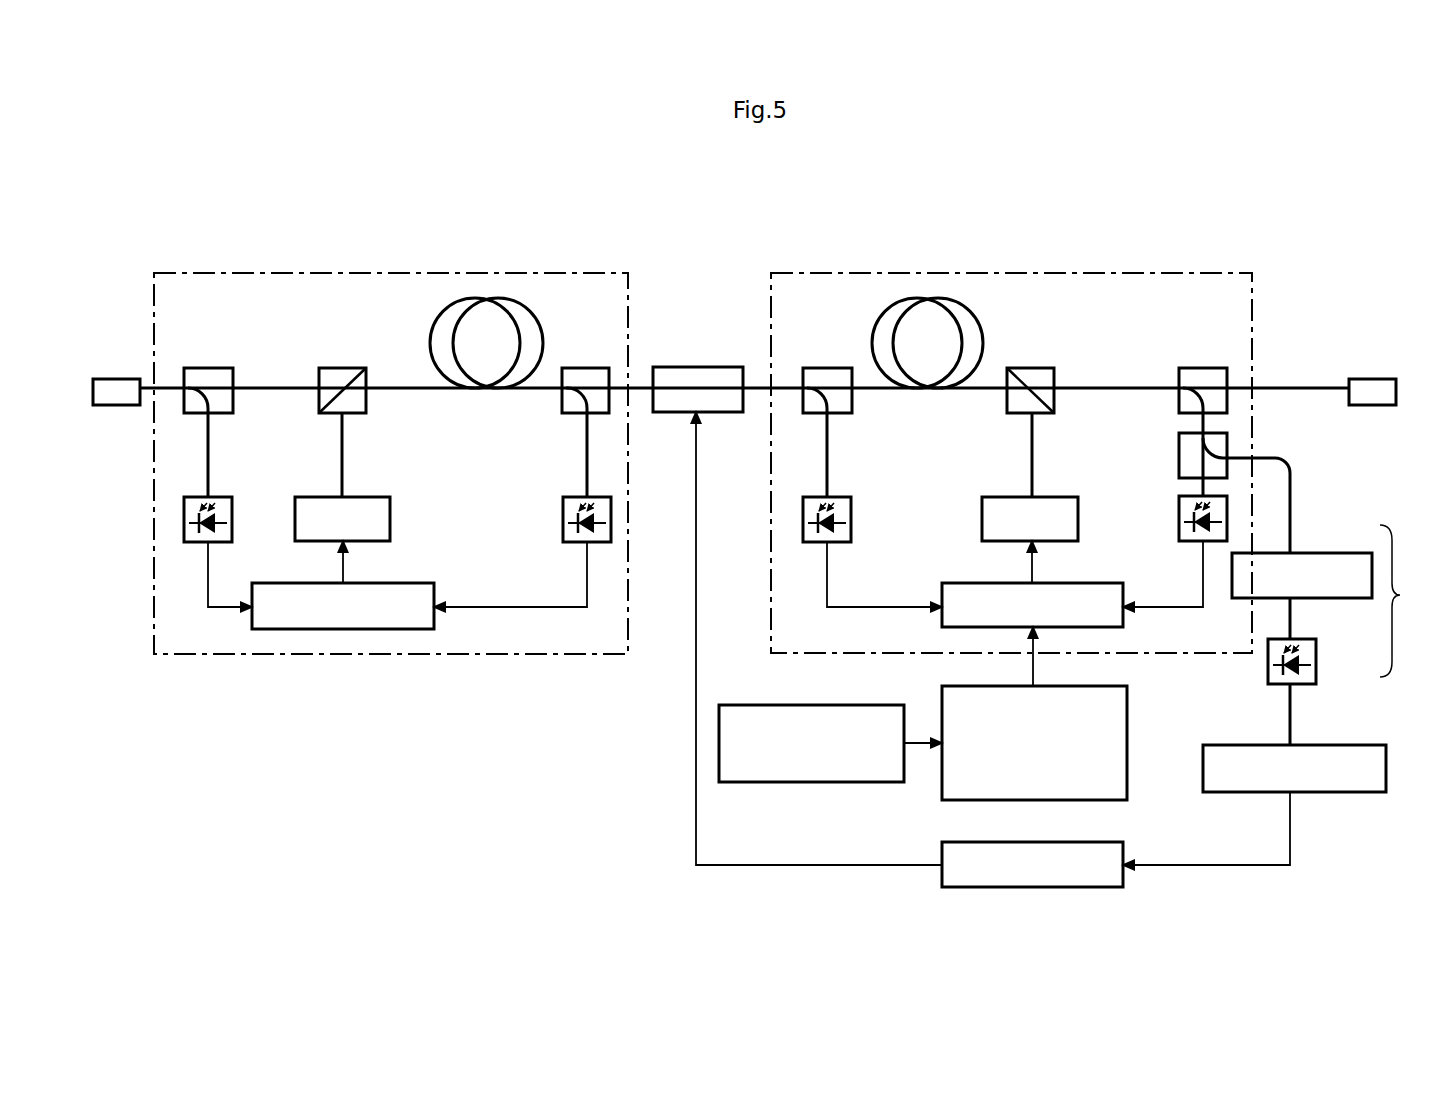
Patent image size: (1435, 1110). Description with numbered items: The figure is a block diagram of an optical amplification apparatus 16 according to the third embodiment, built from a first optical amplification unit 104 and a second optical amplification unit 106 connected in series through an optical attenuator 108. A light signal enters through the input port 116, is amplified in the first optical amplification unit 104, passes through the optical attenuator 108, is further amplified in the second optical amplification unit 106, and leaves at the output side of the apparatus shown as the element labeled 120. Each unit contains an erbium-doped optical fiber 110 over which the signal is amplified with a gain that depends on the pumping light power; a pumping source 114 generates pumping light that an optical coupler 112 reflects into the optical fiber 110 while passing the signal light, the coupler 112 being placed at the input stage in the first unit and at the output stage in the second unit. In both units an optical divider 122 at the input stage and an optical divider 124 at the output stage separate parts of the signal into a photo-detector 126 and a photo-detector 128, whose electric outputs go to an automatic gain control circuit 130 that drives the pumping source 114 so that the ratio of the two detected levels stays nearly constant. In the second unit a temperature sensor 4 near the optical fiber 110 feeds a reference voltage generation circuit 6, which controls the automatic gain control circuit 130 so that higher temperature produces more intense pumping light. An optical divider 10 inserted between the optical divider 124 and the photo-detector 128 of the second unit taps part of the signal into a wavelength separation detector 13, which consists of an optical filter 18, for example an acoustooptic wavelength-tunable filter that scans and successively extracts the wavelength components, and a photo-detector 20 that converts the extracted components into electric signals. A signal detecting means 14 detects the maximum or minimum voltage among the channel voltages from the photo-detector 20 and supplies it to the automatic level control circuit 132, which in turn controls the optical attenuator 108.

The temperature sensor 4 is at (860, 705).
The reference voltage generation circuit 6 is at (1128, 700).
The optical divider 10 is at (1228, 440).
The wavelength separation detector 13 is at (1407, 601).
The signal detecting means 14 is at (1360, 792).
The optical amplification apparatus 16 is at (480, 212).
The optical filter 18 is at (1335, 553).
The photo-detector 20 is at (1316, 662).
The first optical amplification unit 104 is at (292, 272).
The second optical amplification unit 106 is at (848, 272).
The optical attenuator 108 is at (713, 366).
The optical fiber 110 is at (946, 290).
The optical coupler 112 is at (342, 367).
The pumping source 114 is at (378, 497).
The input port 116 is at (102, 378).
The output port 120 is at (1368, 378).
The optical divider 122 is at (208, 367).
The optical divider 124 is at (587, 367).
The photo-detector 126 is at (233, 497).
The photo-detector 128 is at (563, 497).
The automatic gain control circuit 130 is at (418, 583).
The automatic level control circuit 132 is at (1108, 842).